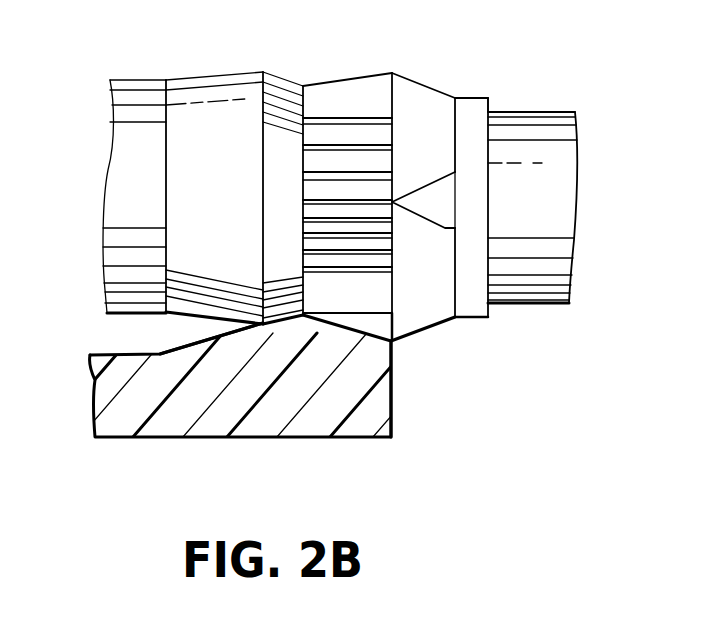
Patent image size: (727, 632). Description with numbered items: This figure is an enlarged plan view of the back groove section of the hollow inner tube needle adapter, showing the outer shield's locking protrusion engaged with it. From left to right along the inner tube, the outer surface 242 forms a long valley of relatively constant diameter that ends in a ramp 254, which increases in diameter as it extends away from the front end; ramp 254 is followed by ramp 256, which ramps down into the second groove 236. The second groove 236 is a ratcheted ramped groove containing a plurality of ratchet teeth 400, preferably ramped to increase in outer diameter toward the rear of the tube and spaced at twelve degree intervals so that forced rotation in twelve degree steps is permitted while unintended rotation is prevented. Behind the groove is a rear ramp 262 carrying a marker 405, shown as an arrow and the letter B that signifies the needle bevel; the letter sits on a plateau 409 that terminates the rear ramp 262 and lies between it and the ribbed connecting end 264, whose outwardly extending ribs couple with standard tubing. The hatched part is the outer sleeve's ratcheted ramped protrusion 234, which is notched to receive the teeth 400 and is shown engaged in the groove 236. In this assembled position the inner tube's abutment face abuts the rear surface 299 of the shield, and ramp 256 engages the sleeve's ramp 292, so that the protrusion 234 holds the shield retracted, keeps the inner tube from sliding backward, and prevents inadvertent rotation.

The outer surface 242 is at (112, 77).
The ramp 254 is at (207, 73).
The ramp 256 is at (277, 77).
The second groove 236 is at (357, 100).
The ratchet teeth 400 is at (385, 145).
The rear ramp 262 is at (445, 97).
The plateau 409 is at (488, 98).
The marker 405 is at (453, 173).
The ribbed connecting end 264 is at (540, 308).
The rear surface 299 is at (392, 383).
The ratcheted ramped protrusion 234 is at (372, 418).
The ramp 292 is at (217, 340).